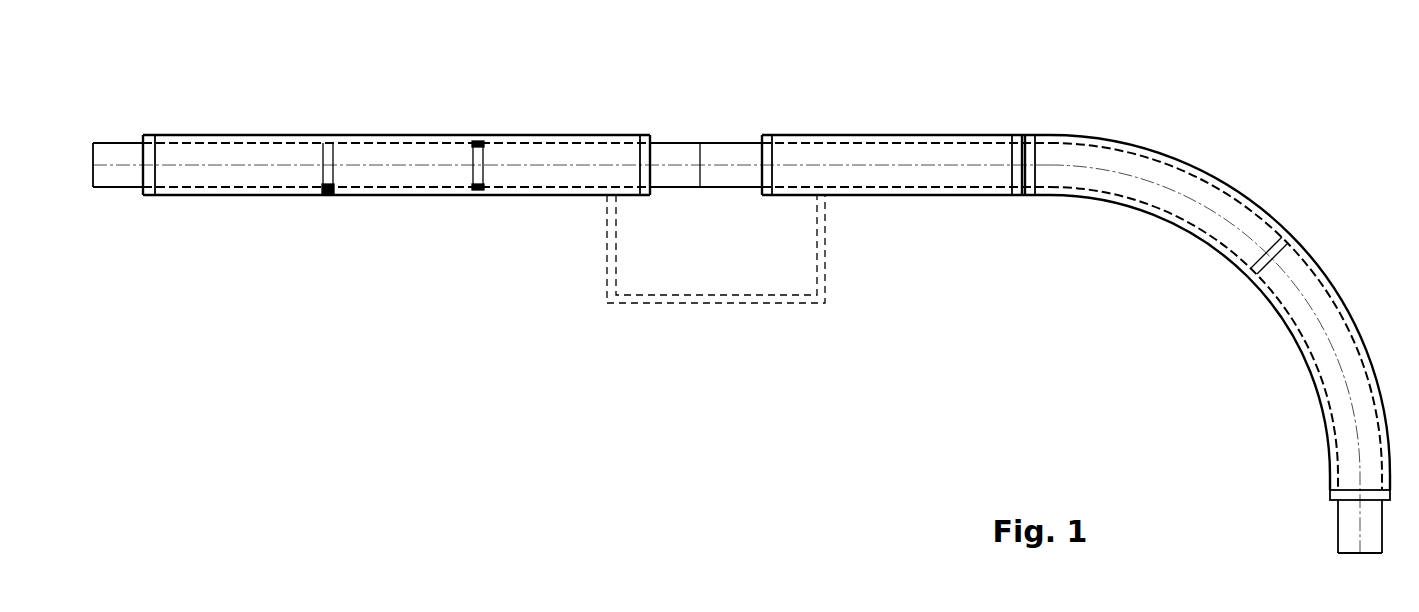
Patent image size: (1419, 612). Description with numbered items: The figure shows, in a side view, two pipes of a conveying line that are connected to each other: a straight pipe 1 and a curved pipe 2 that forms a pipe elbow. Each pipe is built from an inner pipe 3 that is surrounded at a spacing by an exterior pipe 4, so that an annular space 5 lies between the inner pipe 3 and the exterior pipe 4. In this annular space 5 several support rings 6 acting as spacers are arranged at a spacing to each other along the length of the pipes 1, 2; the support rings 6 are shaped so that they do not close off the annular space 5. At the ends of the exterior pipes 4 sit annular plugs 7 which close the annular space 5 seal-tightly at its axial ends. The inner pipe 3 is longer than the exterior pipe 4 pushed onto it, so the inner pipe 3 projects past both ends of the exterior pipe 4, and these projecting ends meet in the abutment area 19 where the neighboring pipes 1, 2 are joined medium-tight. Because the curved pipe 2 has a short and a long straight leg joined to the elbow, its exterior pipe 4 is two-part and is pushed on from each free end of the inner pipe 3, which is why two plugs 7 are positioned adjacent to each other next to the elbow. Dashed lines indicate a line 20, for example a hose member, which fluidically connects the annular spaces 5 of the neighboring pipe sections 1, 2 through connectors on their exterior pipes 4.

The straight pipe 1 is at (497, 105).
The curved pipe 2 is at (1242, 178).
The inner pipe 3 is at (667, 155).
The exterior pipe 4 is at (180, 135).
The annular space 5 is at (553, 138).
The support ring 6 is at (460, 140).
The annular plug 7 is at (150, 180).
The abutment area 19 is at (680, 220).
The line 20 is at (673, 295).